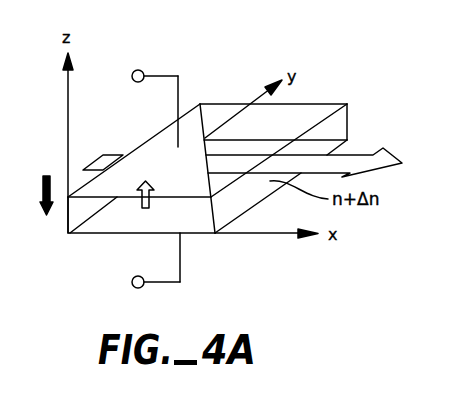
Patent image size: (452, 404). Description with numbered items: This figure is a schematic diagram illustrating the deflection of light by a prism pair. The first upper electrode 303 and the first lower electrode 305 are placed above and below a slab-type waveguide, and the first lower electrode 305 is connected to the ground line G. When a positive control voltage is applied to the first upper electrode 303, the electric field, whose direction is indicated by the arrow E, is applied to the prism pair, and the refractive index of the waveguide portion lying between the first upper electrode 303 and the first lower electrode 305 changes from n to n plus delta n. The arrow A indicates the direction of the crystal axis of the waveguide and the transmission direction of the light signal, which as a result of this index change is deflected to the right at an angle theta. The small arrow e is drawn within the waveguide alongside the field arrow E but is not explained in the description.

The first upper electrode 303 is at (158, 150).
The first lower electrode 305 is at (93, 234).
The arrow indicating direction of crystal axis / transmission direction of light sig A is at (304, 153).
The arrow indicating direction of electric field E is at (35, 195).
The optical polarization direction e is at (150, 193).